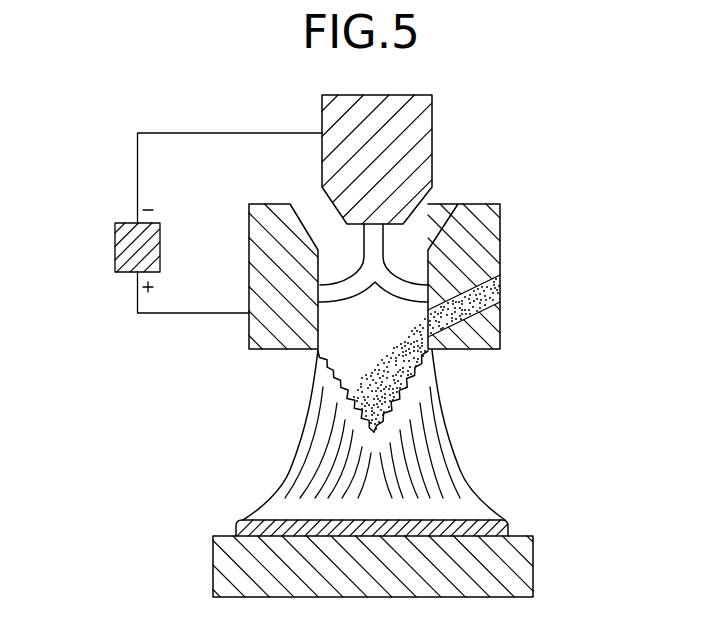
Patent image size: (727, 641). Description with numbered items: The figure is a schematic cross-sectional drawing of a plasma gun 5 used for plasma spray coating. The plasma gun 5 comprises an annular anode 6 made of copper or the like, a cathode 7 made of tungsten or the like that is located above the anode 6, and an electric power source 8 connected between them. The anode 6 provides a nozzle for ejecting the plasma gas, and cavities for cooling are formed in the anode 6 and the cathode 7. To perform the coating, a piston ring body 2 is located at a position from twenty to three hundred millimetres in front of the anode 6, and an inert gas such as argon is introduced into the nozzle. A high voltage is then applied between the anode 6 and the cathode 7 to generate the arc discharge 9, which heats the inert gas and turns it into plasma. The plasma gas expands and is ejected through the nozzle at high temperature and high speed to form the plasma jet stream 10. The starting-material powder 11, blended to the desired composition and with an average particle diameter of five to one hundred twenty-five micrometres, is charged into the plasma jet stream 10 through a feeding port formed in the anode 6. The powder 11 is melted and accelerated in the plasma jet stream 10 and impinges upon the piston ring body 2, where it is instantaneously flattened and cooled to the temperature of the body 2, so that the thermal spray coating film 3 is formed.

The piston ring body 2 is at (532, 557).
The thermal spray coating film 3 is at (278, 524).
The plasma gun 5 is at (528, 194).
The annular anode 6 is at (248, 333).
The cathode 7 is at (432, 116).
The electric power source 8 is at (115, 243).
The arc discharge 9 is at (388, 257).
The plasma jet stream 10 is at (452, 437).
The starting-material powder 11 is at (406, 373).